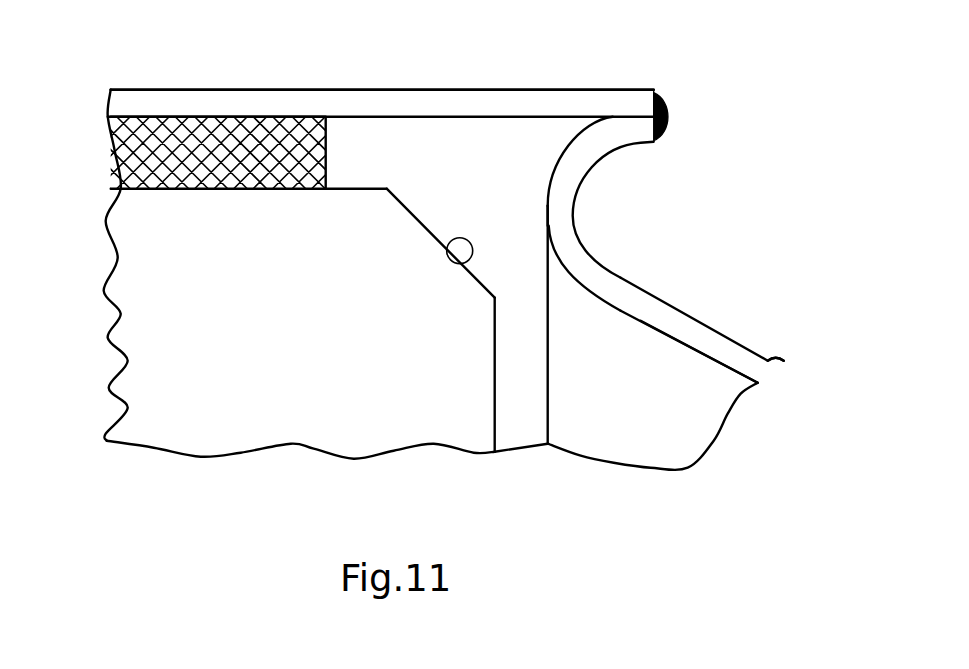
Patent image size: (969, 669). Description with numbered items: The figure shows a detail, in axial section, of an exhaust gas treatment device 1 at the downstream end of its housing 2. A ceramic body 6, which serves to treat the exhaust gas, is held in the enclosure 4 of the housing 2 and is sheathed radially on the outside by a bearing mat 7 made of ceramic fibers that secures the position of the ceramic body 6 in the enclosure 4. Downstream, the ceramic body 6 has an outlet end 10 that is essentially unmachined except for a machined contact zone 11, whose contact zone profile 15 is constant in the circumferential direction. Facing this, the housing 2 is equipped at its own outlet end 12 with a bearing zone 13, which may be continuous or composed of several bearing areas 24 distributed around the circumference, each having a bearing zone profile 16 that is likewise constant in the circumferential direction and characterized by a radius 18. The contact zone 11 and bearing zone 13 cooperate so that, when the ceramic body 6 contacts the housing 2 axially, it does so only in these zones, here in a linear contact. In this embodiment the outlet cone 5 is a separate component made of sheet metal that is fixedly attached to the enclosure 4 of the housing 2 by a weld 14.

The exhaust gas treatment device 1 is at (778, 190).
The housing 2 is at (196, 87).
The enclosure 4 is at (305, 97).
The outlet cone 5 is at (707, 350).
The ceramic body 6 is at (153, 420).
The bearing mat 7 is at (148, 180).
The outlet end 10 is at (495, 400).
The contact zone 11 is at (420, 216).
The outlet end 12 is at (672, 340).
The bearing zone 13 is at (534, 200).
The weld 14 is at (666, 112).
The contact zone profile 15 is at (463, 262).
The bearing zone profile 16 is at (556, 250).
The radius of the bearing zone profile 18 is at (549, 221).
The bearing area 24 is at (550, 176).